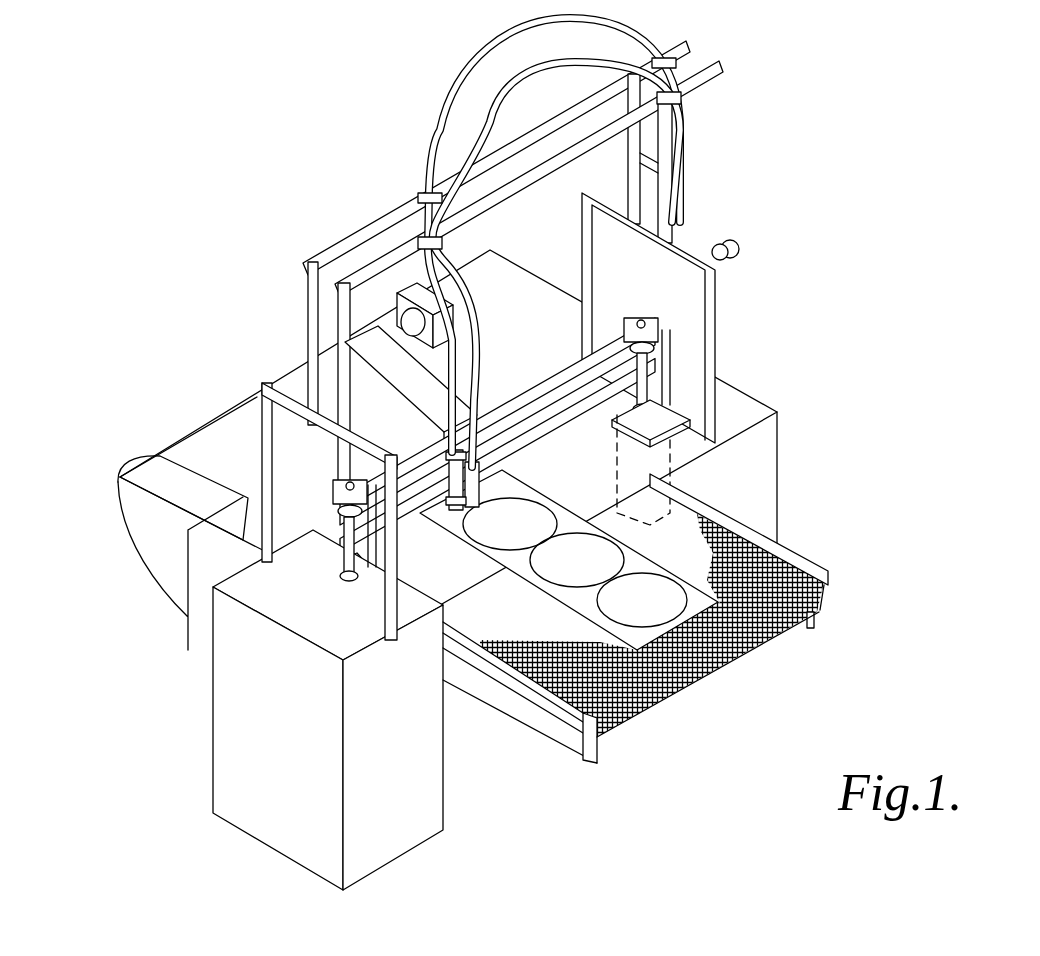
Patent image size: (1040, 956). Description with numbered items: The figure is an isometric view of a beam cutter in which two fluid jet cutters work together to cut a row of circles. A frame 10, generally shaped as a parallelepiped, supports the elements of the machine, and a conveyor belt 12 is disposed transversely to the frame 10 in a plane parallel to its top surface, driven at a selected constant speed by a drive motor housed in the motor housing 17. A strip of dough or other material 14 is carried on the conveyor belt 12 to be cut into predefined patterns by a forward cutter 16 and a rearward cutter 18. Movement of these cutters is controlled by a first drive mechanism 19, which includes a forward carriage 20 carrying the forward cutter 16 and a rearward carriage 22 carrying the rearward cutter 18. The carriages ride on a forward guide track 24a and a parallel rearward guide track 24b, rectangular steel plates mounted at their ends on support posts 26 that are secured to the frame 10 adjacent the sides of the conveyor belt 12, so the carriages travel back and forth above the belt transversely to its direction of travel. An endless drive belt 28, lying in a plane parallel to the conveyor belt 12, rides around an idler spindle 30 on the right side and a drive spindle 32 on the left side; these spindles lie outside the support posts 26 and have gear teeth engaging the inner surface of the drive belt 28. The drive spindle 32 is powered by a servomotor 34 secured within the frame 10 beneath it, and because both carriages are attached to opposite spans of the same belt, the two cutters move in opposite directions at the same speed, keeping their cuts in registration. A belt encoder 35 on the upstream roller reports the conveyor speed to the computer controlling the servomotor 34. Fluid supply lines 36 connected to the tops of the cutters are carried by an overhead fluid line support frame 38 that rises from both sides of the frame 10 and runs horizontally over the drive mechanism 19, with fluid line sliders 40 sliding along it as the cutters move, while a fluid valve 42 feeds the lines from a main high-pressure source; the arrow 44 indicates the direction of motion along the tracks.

The frame 10 is at (780, 424).
The conveyor belt 12 is at (813, 570).
The strip of dough or other material 14 is at (723, 670).
The forward cutter 16 is at (470, 465).
The motor housing 17 is at (198, 562).
The rearward cutter 18 is at (507, 393).
The first drive mechanism 19 is at (688, 385).
The forward carriage 20 is at (457, 452).
The rearward carriage 22 is at (490, 460).
The forward guide track 24a is at (606, 358).
The rearward guide track 24b is at (580, 373).
The support posts 26 is at (612, 424).
The endless drive belt 28 is at (400, 512).
The idler spindle 30 is at (300, 585).
The drive spindle 32 is at (662, 325).
The servomotor 34 is at (690, 482).
The belt encoder 35 is at (420, 300).
The fluid supply lines 36 is at (478, 130).
The fluid line support frame 38 is at (367, 272).
The fluid line sliders 40 is at (670, 97).
The fluid valve 42 is at (732, 252).
The direction arrow 44 is at (503, 386).